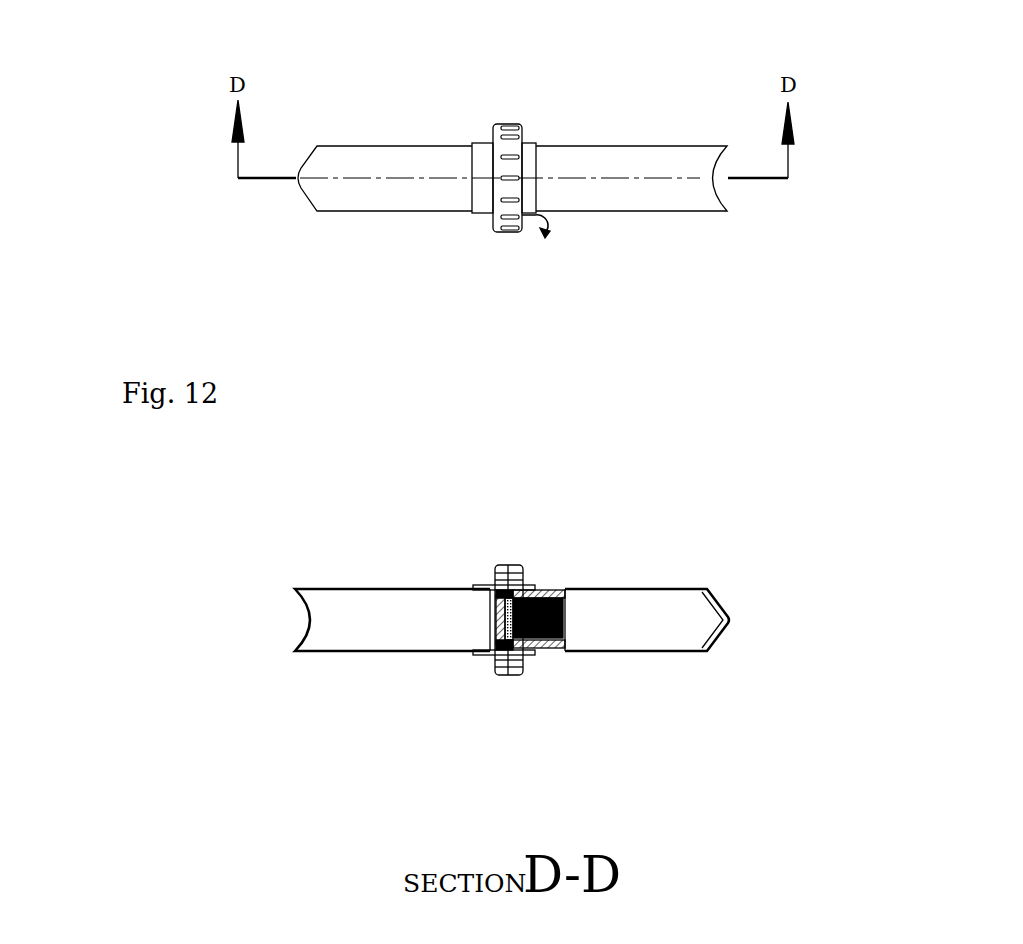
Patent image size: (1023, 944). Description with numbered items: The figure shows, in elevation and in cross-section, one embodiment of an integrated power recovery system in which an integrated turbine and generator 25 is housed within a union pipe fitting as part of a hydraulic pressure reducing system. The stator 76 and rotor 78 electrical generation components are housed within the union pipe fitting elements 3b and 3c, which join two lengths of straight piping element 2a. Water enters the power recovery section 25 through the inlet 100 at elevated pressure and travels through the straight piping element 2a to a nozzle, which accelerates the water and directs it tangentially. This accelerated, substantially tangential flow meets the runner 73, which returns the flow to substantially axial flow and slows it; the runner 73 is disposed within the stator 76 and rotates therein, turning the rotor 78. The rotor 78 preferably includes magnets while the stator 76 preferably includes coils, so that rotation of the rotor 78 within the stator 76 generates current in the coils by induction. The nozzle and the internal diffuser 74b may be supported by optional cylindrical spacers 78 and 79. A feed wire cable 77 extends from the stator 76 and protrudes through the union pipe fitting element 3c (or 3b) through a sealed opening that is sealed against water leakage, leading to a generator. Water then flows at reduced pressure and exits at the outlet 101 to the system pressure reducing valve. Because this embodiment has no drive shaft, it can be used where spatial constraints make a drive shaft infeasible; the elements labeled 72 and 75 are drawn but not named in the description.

The straight piping element 2a is at (345, 146).
The union pipe fitting element 3b is at (473, 143).
The union pipe fitting element 3c is at (528, 138).
The integrated turbine and generator 25 is at (884, 314).
The feed wire cable 77 is at (546, 238).
The ring 72 is at (496, 611).
The runner 73 is at (516, 652).
The internal diffuser 74b is at (562, 600).
The gasket 75 is at (527, 645).
The stator 76 is at (511, 660).
The rotor 78 is at (508, 630).
The cylindrical spacer 79 is at (495, 603).
The inlet 100 is at (270, 624).
The outlet 101 is at (775, 624).